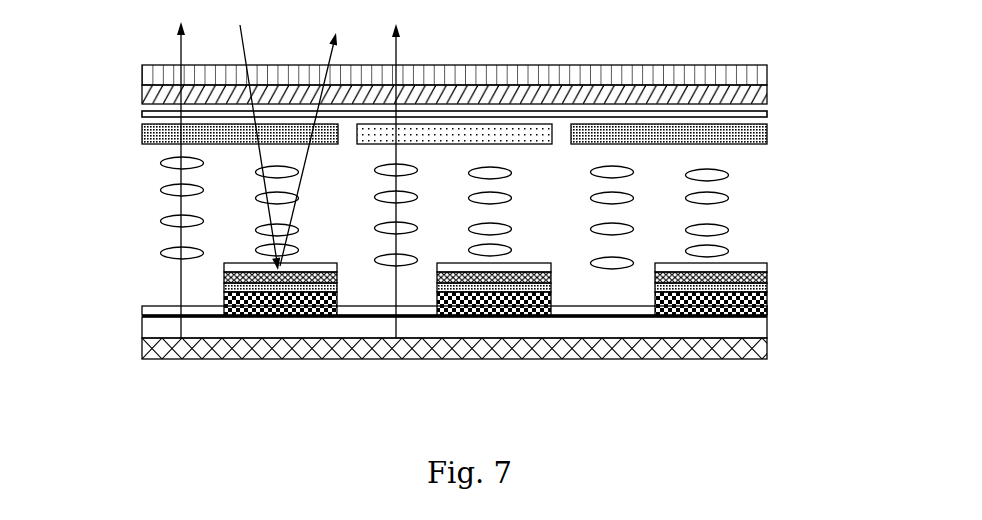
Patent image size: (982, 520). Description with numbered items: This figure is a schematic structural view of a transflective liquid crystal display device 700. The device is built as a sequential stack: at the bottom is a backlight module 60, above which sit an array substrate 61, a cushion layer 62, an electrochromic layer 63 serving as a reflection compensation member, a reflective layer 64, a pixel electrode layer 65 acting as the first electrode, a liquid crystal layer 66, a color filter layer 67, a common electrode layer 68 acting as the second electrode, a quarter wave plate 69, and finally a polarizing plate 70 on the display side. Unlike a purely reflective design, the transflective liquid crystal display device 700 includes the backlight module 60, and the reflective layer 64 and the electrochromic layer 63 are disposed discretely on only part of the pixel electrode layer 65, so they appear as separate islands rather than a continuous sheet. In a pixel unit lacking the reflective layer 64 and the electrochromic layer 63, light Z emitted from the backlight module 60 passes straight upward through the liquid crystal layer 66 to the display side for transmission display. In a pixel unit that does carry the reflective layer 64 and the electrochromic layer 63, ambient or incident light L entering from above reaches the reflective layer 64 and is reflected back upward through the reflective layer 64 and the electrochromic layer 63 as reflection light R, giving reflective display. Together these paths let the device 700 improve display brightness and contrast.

The transflective liquid crystal display device 700 is at (101, 84).
The polarizing plate 70 is at (768, 75).
The quarter wave plate 69 is at (768, 93).
The common electrode layer 68 is at (768, 115).
The color filter layer 67 is at (768, 135).
The liquid crystal layer 66 is at (752, 209).
The pixel electrode layer 65 is at (768, 265).
The reflective layer 64 is at (768, 277).
The electrochromic layer 63 is at (768, 285).
The cushion layer 62 is at (768, 311).
The array substrate 61 is at (762, 327).
The backlight module 60 is at (767, 355).